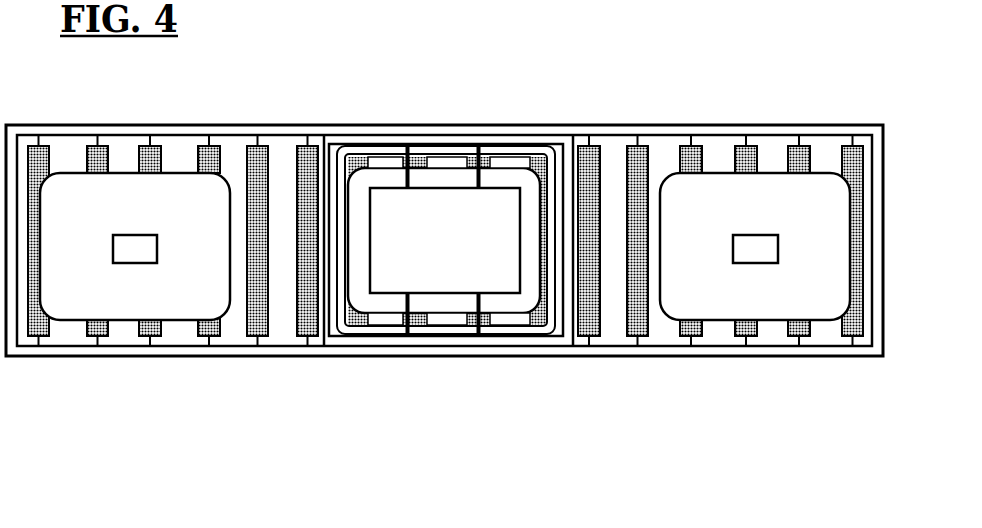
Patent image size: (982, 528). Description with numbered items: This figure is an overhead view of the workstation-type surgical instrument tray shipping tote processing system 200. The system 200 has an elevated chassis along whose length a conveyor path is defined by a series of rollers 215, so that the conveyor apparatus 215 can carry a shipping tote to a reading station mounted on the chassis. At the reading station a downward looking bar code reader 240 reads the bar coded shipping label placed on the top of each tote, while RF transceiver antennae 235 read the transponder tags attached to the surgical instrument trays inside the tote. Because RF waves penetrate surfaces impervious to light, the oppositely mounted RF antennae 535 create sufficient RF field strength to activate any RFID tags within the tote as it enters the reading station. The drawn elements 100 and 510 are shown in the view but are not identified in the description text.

The processing system 200 is at (405, 40).
The semiconductor die 100 is at (151, 213).
The bar code reader 240 is at (471, 250).
The rollers 215 is at (270, 303).
The RF transceiver antennae 235 is at (522, 336).
The leadframe 510 is at (742, 125).
The RF transceiver antennae 535 is at (513, 147).